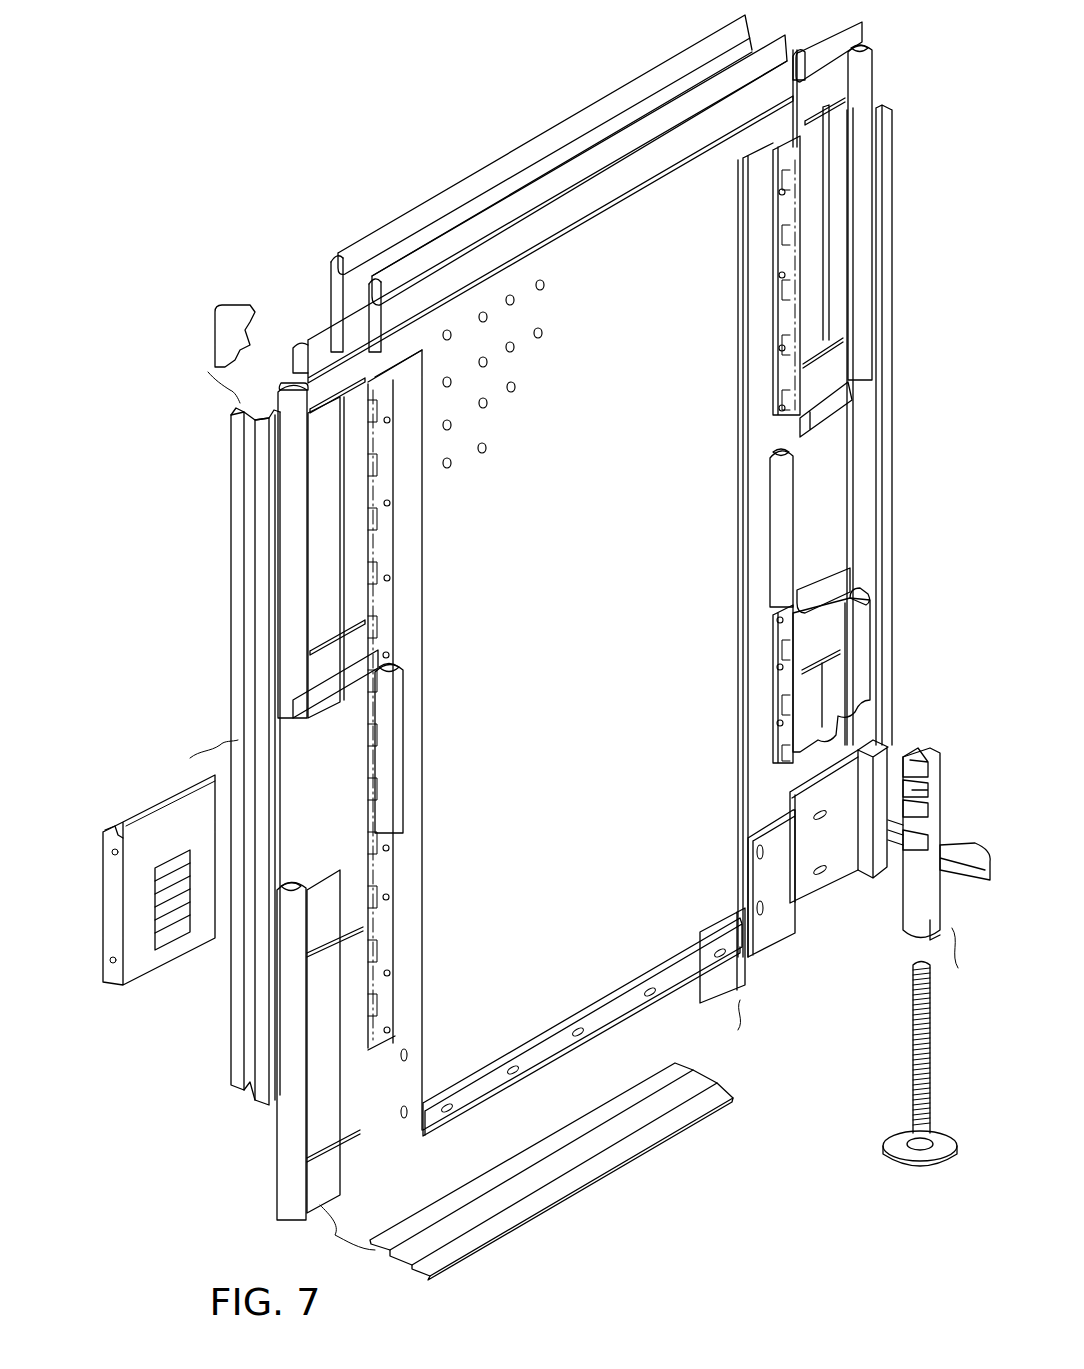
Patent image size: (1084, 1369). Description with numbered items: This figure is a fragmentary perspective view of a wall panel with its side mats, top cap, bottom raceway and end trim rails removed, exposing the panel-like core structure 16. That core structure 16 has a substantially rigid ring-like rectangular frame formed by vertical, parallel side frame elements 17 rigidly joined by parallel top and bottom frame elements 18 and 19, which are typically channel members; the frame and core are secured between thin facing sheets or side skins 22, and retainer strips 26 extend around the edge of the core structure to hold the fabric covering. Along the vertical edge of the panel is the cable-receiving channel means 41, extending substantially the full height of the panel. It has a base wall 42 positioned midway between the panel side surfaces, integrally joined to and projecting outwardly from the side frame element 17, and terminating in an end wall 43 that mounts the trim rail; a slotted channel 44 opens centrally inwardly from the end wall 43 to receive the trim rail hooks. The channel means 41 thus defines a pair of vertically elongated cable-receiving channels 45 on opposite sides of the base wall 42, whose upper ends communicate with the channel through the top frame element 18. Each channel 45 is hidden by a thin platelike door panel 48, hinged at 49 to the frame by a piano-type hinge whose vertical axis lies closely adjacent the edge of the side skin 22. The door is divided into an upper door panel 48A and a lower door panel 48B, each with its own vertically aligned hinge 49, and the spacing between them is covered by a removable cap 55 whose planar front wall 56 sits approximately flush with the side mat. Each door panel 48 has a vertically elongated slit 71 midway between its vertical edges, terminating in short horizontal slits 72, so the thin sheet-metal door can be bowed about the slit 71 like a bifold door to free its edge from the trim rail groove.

The panel-like core structure 16 is at (745, 530).
The side frame element 17 is at (415, 540).
The top frame element 18 is at (490, 205).
The bottom frame element 19 is at (680, 968).
The facing sheet 22 is at (574, 636).
The retainer strip 26 is at (620, 178).
The cable-receiving channel means 41 is at (573, 546).
The base wall 42 is at (564, 603).
The end wall 43 is at (236, 976).
The slotted channel 44 is at (242, 1078).
The cable-receiving channel 45 is at (342, 790).
The door panel 48 is at (325, 478).
The upper door panel 48A is at (323, 562).
The lower door panel 48B is at (320, 1046).
The hinge 49 is at (375, 497).
The cap 55 is at (159, 884).
The front wall 56 is at (160, 955).
The slit 71 is at (345, 446).
The horizontal slit 72 is at (320, 420).